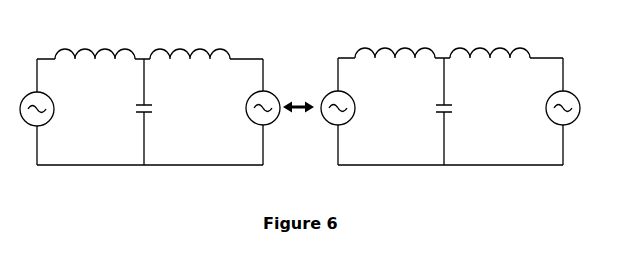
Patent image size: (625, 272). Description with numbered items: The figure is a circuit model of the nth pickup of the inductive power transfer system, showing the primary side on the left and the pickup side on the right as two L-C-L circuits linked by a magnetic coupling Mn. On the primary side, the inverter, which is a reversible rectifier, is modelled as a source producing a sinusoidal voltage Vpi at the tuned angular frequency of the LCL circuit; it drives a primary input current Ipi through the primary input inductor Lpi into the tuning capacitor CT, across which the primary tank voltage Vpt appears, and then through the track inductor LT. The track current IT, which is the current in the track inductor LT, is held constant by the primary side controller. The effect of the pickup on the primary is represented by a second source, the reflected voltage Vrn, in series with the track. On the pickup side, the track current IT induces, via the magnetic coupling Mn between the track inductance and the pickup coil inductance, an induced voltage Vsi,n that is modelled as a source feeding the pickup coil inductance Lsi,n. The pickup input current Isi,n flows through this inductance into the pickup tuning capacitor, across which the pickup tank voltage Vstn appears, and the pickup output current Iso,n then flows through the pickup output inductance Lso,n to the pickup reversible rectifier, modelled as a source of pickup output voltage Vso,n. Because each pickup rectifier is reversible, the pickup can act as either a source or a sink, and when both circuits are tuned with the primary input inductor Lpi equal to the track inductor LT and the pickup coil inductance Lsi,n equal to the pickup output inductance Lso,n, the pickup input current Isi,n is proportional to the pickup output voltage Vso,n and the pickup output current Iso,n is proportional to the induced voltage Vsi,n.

The primary side inverter voltage Vpi is at (58, 86).
The primary input current Ipi is at (70, 43).
The primary input inductor Lpi is at (95, 39).
The track inductor LT is at (190, 42).
The track tuning capacitor CT is at (155, 112).
The primary tank voltage Vpt is at (130, 86).
The track current IT is at (264, 43).
The reflected voltage Vrn is at (240, 86).
The magnetic coupling Mn is at (298, 96).
The induced voltage Vsi,n is at (358, 88).
The pickup input current Isi,n is at (372, 40).
The pickup coil inductance Lsi,n is at (395, 41).
The pickup output inductance Lso,n is at (490, 41).
The pickup tank voltage Vstn is at (459, 86).
The pickup output current Iso,n is at (565, 43).
The pickup output voltage Vso,n is at (543, 86).